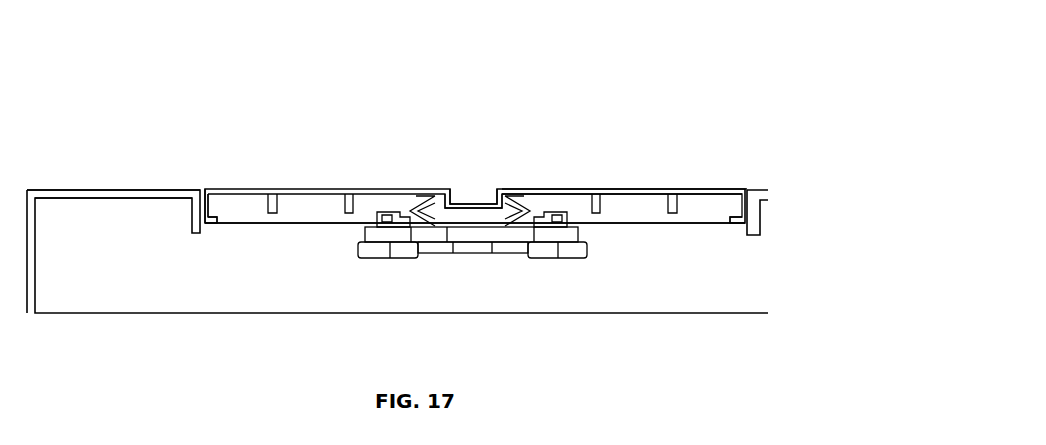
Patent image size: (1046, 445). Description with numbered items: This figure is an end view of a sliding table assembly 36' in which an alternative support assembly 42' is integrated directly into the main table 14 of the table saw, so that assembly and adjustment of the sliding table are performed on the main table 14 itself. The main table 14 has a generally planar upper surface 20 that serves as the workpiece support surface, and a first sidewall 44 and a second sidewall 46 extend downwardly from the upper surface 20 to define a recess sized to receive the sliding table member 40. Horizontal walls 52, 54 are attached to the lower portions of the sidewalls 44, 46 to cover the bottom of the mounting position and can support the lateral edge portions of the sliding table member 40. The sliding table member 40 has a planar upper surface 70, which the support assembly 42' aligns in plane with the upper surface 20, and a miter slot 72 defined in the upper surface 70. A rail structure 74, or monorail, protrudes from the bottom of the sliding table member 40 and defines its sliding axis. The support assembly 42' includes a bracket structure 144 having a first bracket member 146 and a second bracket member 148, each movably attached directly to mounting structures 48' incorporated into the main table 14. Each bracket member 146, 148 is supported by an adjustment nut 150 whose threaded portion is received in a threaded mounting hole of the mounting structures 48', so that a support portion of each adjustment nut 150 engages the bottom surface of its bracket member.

The main table 14 is at (73, 162).
The upper surface 20 is at (110, 190).
The sliding table assembly 36' is at (691, 103).
The sliding table member 40 is at (310, 158).
The support assembly 42' is at (475, 255).
The first sidewall 44 is at (203, 194).
The second sidewall 46 is at (743, 190).
The mounting structures 48' is at (432, 242).
The horizontal wall 52 is at (243, 225).
The horizontal wall 54 is at (712, 226).
The upper surface 70 is at (580, 190).
The miter slot 72 is at (468, 193).
The rail structure 74 is at (450, 228).
The bracket structure 144 is at (487, 262).
The first bracket member 146 is at (530, 207).
The second bracket member 148 is at (418, 207).
The adjustment nut 150 is at (385, 260).